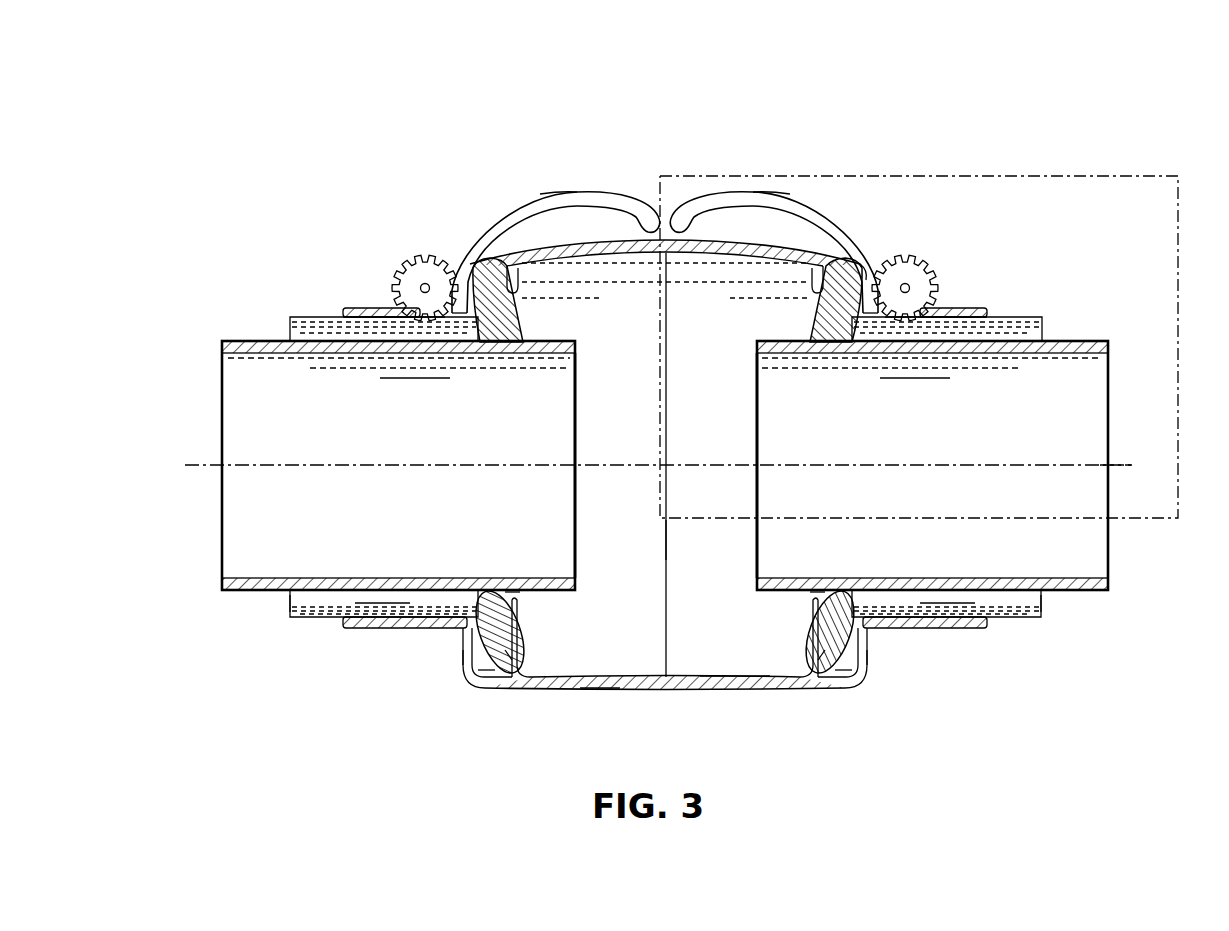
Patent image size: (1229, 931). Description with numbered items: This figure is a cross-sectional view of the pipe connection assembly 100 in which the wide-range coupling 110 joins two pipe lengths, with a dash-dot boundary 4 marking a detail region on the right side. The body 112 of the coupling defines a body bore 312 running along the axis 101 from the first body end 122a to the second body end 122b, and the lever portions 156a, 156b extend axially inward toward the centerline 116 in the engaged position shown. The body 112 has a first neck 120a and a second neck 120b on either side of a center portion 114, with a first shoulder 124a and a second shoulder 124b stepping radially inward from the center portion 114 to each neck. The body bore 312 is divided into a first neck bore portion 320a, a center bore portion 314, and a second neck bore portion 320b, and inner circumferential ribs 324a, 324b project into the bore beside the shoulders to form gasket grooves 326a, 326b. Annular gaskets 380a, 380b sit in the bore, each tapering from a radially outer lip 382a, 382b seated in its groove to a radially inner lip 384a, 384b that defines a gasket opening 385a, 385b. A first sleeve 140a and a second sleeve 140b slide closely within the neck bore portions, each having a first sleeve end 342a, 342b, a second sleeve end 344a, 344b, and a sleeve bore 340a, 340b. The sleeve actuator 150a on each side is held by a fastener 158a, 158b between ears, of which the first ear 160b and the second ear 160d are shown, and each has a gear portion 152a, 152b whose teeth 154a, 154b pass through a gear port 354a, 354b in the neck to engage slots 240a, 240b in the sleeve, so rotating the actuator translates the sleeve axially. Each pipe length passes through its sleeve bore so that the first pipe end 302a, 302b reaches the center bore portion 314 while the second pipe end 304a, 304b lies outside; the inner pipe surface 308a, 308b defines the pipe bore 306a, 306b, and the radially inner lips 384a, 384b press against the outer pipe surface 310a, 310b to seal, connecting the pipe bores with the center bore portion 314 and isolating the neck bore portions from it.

The pipe connection assembly 100 is at (293, 114).
The axis 101 is at (1130, 467).
The detail region of FIG. 4 is at (1181, 174).
The wide-range coupling 110 is at (757, 116).
The body 112 is at (580, 688).
The center portion 114 is at (598, 689).
The centerline 116 is at (677, 540).
The first neck 120a is at (380, 308).
The second neck 120b is at (967, 307).
The first body end 122a is at (347, 312).
The second body end 122b is at (990, 313).
The first shoulder 124a is at (463, 640).
The second shoulder 124b is at (870, 648).
The first sleeve 140a is at (290, 318).
The second sleeve 140b is at (1042, 317).
The first sleeve actuator 150a is at (512, 201).
The gear portion 152a is at (402, 278).
The gear portion 152b is at (922, 282).
The teeth 154a is at (421, 318).
The teeth 154b is at (913, 318).
The lever portion 156a is at (567, 197).
The lever portion 156b is at (707, 197).
The fastener 158a is at (423, 282).
The fastener 158b is at (906, 283).
The first ear 160b is at (453, 272).
The second ear 160d is at (876, 283).
The slots 240a is at (436, 318).
The slots 240b is at (898, 318).
The first pipe end 302a is at (578, 405).
The first pipe end 302b is at (757, 437).
The second pipe end 304a is at (222, 422).
The second pipe end 304b is at (1110, 410).
The pipe bore 306a is at (240, 523).
The pipe bore 306b is at (1090, 543).
The inner pipe surface 308a is at (272, 358).
The inner pipe surface 308b is at (1097, 358).
The outer pipe surface 310a is at (234, 337).
The outer pipe surface 310b is at (1093, 336).
The body bore 312 is at (717, 667).
The center bore portion 314 is at (743, 664).
The first neck bore portion 320a is at (367, 318).
The second neck bore portion 320b is at (963, 320).
The inner circumferential rib 324a is at (509, 657).
The inner circumferential rib 324b is at (821, 663).
The gasket groove 326a is at (464, 666).
The gasket groove 326b is at (832, 677).
The sleeve bore 340a is at (318, 600).
The sleeve bore 340b is at (1007, 602).
The first sleeve end 342a is at (492, 578).
The first sleeve end 342b is at (835, 590).
The second sleeve end 344a is at (288, 602).
The second sleeve end 344b is at (1042, 600).
The gear port 354a is at (478, 322).
The gear port 354b is at (862, 318).
The gasket 380a is at (514, 622).
The gasket 380b is at (818, 630).
The radially outer lip 382a is at (484, 675).
The radially outer lip 382b is at (846, 675).
The radially inner lip 384a is at (514, 593).
The radially inner lip 384b is at (816, 593).
The gasket opening 385a is at (518, 590).
The gasket opening 385b is at (808, 592).